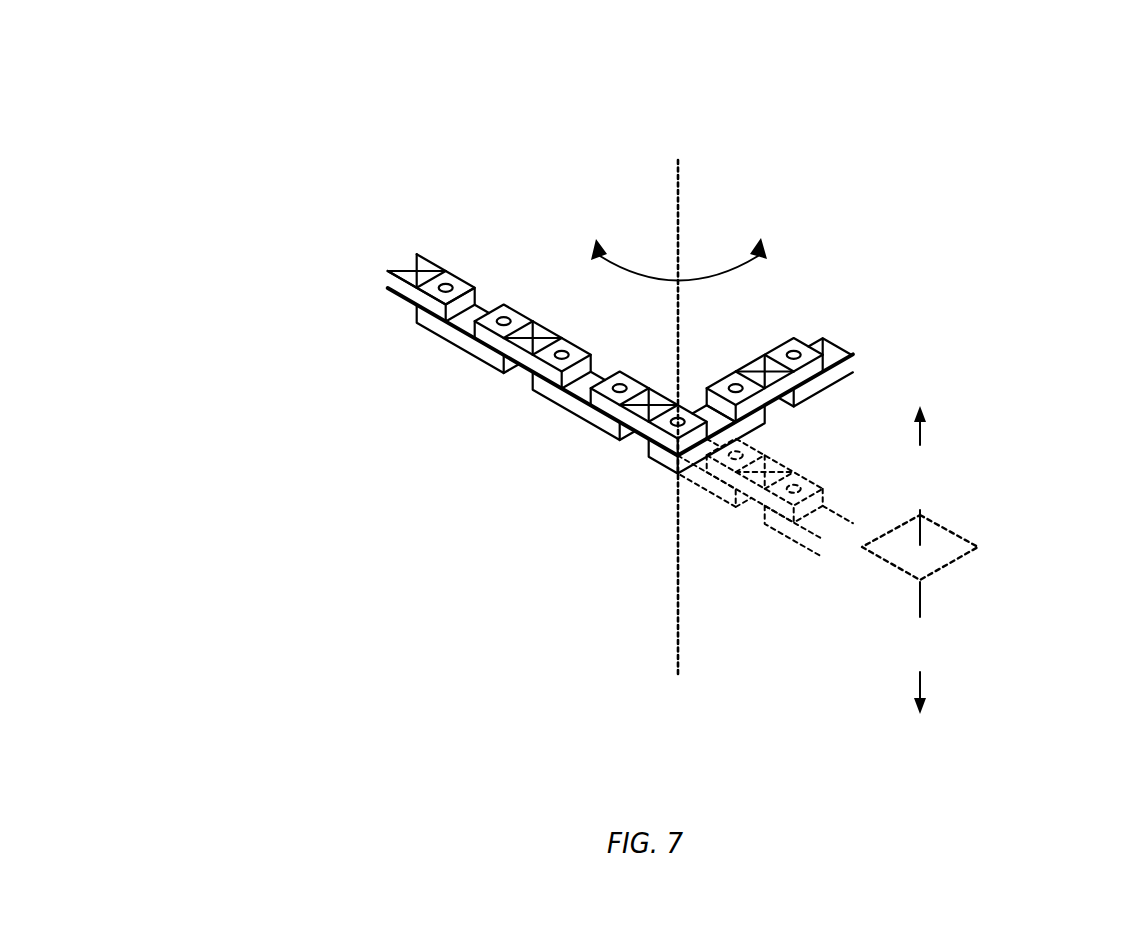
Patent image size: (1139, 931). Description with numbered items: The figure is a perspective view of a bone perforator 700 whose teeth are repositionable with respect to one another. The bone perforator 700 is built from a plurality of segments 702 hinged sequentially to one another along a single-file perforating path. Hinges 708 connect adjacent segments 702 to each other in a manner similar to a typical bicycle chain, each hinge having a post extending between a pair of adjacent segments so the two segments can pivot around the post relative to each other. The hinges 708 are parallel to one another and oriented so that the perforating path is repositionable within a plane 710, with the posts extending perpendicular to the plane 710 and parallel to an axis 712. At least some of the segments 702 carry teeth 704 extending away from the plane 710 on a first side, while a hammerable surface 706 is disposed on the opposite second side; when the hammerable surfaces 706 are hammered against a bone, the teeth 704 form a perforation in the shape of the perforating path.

The bone perforator 700 is at (260, 179).
The segments 702 is at (575, 402).
The teeth 704 is at (672, 402).
The hammerable surface 706 is at (663, 465).
The hinges 708 is at (501, 314).
The plane 710 is at (979, 547).
The axis 712 is at (679, 385).